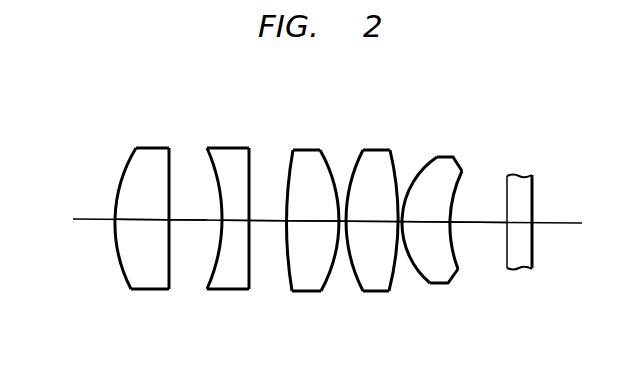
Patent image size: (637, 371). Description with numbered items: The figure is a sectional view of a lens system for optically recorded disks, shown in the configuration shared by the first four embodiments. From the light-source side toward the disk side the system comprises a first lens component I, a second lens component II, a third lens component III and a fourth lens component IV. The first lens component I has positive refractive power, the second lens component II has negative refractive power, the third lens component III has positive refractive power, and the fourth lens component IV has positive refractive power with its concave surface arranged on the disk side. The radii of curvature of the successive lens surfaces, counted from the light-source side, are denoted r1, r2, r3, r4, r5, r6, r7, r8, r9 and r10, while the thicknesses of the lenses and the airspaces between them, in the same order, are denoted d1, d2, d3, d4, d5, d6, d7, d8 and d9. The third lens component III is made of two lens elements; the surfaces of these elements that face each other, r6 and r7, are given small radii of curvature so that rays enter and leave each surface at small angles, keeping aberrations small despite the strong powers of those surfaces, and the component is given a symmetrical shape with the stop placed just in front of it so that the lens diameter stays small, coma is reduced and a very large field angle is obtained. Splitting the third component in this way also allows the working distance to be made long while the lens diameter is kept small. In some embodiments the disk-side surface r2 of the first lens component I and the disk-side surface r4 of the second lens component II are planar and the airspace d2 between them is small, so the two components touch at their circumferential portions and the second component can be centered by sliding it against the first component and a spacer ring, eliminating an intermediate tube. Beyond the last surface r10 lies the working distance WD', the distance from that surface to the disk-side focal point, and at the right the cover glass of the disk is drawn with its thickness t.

The first lens component I is at (172, 135).
The second lens component II is at (250, 135).
The third lens component III is at (393, 135).
The fourth lens component IV is at (467, 135).
The radius of curvature of first lens surface r1 is at (121, 186).
The radius of curvature of second lens surface r2 is at (169, 192).
The radius of curvature of third lens surface r3 is at (221, 189).
The radius of curvature of fourth lens surface r4 is at (249, 190).
The radius of curvature of fifth lens surface r5 is at (287, 195).
The radius of curvature of sixth lens surface r6 is at (336, 196).
The radius of curvature of seventh lens surface r7 is at (350, 192).
The radius of curvature of eighth lens surface r8 is at (396, 196).
The radius of curvature of ninth lens surface r9 is at (408, 190).
The radius of curvature of tenth lens surface r10 is at (461, 190).
The lens thickness d1 is at (138, 220).
The airspace d2 is at (197, 220).
The lens thickness d3 is at (235, 221).
The airspace d4 is at (263, 221).
The lens thickness d5 is at (308, 222).
The airspace d6 is at (341, 224).
The lens thickness d7 is at (372, 224).
The airspace d8 is at (401, 225).
The lens thickness d9 is at (437, 224).
The working distance WD' is at (478, 211).
The thickness of the cover glass t is at (519, 222).